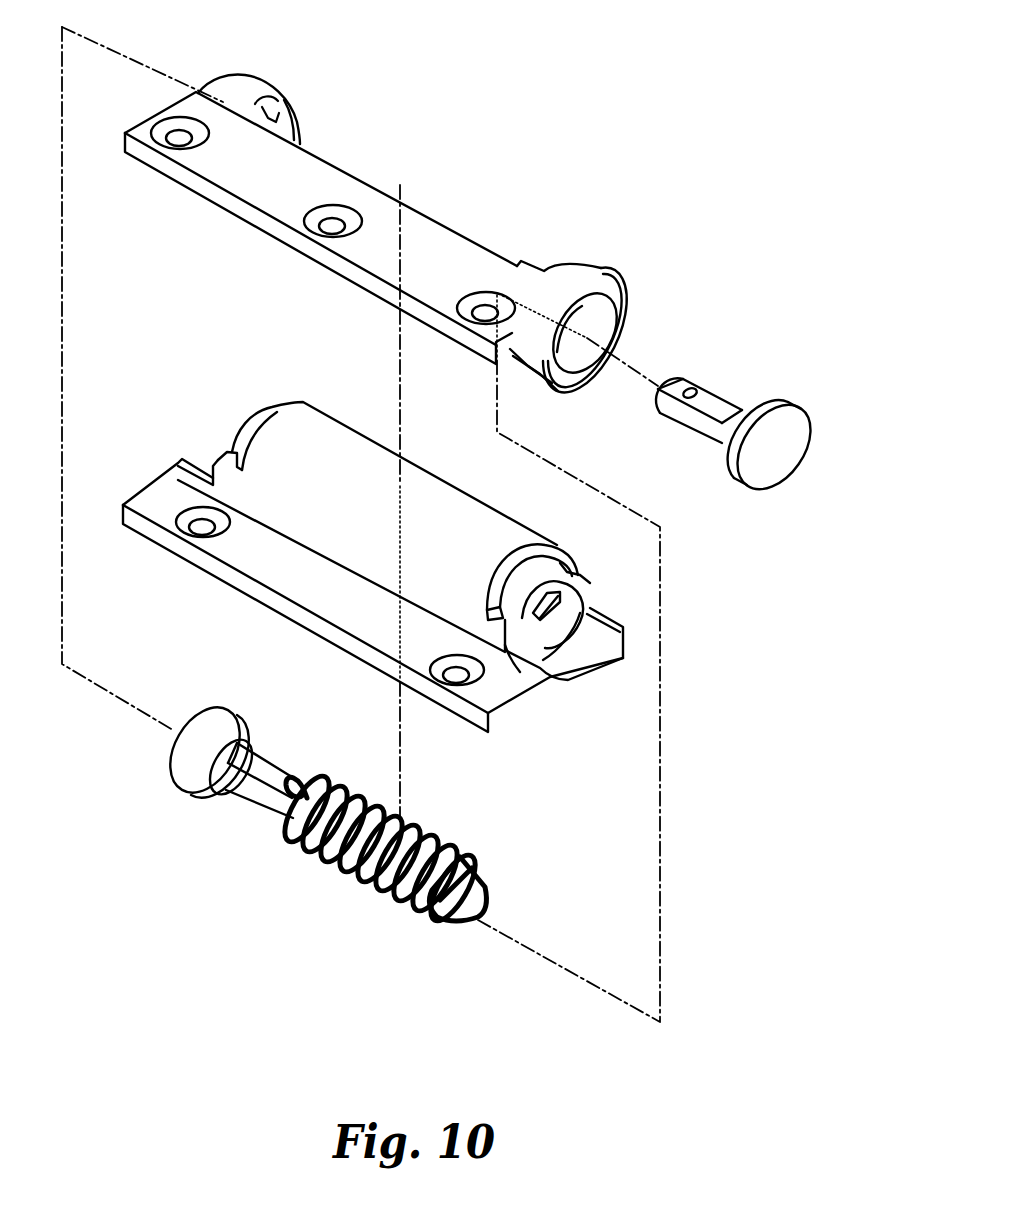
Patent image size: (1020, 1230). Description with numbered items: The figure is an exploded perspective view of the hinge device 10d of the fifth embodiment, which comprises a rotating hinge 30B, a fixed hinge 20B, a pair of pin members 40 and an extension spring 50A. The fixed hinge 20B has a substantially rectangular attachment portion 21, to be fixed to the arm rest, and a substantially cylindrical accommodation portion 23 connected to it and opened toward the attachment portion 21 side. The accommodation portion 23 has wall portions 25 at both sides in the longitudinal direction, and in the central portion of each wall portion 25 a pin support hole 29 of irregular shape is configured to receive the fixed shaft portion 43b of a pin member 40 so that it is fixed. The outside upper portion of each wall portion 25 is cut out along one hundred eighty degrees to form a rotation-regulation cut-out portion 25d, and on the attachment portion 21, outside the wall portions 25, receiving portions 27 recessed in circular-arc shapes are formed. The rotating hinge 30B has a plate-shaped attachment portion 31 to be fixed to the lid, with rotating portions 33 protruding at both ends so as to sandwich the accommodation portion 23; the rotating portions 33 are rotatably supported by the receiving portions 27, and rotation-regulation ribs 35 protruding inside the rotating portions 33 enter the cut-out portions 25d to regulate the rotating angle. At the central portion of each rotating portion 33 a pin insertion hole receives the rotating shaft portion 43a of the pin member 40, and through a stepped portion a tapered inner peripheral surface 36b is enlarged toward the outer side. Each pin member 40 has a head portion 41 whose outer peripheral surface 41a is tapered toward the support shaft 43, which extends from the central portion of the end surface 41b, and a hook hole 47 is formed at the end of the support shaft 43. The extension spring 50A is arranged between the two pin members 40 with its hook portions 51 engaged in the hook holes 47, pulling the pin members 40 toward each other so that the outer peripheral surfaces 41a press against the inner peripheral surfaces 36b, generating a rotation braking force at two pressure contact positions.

The hinge device 10d is at (375, 170).
The rotating hinge 30B is at (415, 209).
The attachment portion 31 is at (265, 215).
The rotating portions 33 is at (243, 86).
The rotation-regulation ribs 35 is at (292, 120).
The inner peripheral surfaces 36b is at (612, 322).
The pin members 40 is at (725, 387).
The head portion 41 is at (795, 425).
The outer peripheral surface 41a is at (756, 425).
The end surface 41b is at (240, 735).
The support shaft 43 is at (662, 414).
The rotating shaft portion 43a is at (720, 423).
The fixed shaft portion 43b is at (663, 410).
The hook holes 47 is at (740, 388).
The fixed hinge 20B is at (425, 575).
The attachment portion 21 is at (458, 703).
The accommodation portion 23 is at (432, 490).
The wall portions 25 is at (497, 637).
The rotation-regulation cut-out portion 25d is at (227, 453).
The receiving portions 27 is at (607, 613).
The pin support holes 29 is at (588, 605).
The extension spring 50A is at (381, 854).
The hook portions 51 is at (305, 790).